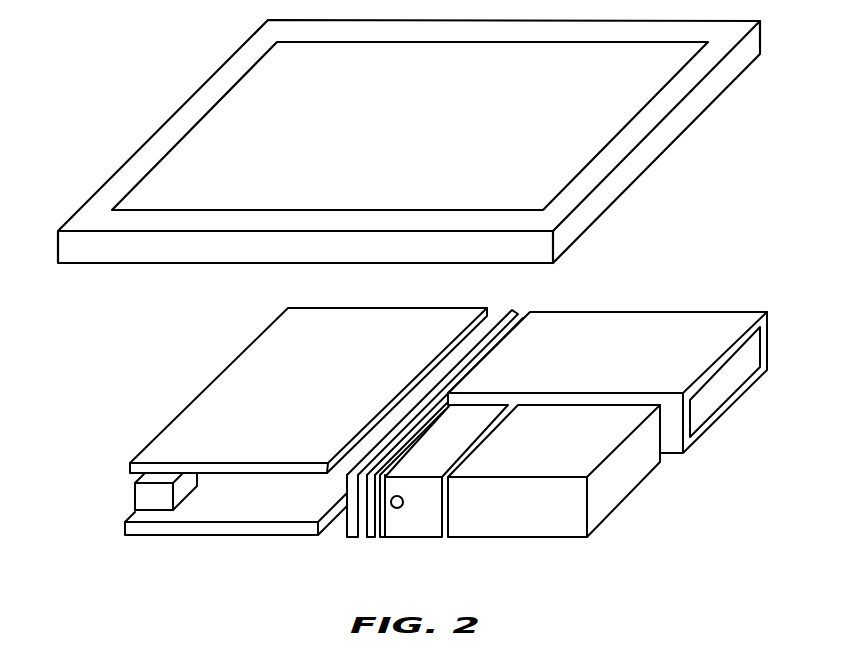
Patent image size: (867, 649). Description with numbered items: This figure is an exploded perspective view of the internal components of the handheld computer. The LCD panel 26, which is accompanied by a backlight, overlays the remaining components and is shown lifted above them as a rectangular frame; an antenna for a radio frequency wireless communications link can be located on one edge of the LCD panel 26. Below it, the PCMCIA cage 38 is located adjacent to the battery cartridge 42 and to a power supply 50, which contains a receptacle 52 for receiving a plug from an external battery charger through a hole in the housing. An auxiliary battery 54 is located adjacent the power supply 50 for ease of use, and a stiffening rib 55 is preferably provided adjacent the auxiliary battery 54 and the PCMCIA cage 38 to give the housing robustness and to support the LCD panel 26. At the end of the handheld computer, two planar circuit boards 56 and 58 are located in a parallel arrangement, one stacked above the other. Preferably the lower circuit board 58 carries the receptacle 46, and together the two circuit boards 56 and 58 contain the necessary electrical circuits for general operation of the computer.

The LCD panel 26 is at (436, 139).
The PCMCIA cage 38 is at (733, 310).
The battery cartridge 42 is at (623, 497).
The receptacle 46 is at (135, 497).
The power supply 50 is at (428, 538).
The receptacle 52 is at (395, 510).
The auxiliary battery 54 is at (365, 538).
The stiffening rib 55 is at (515, 310).
The circuit board 56 is at (232, 362).
The circuit board 58 is at (187, 535).